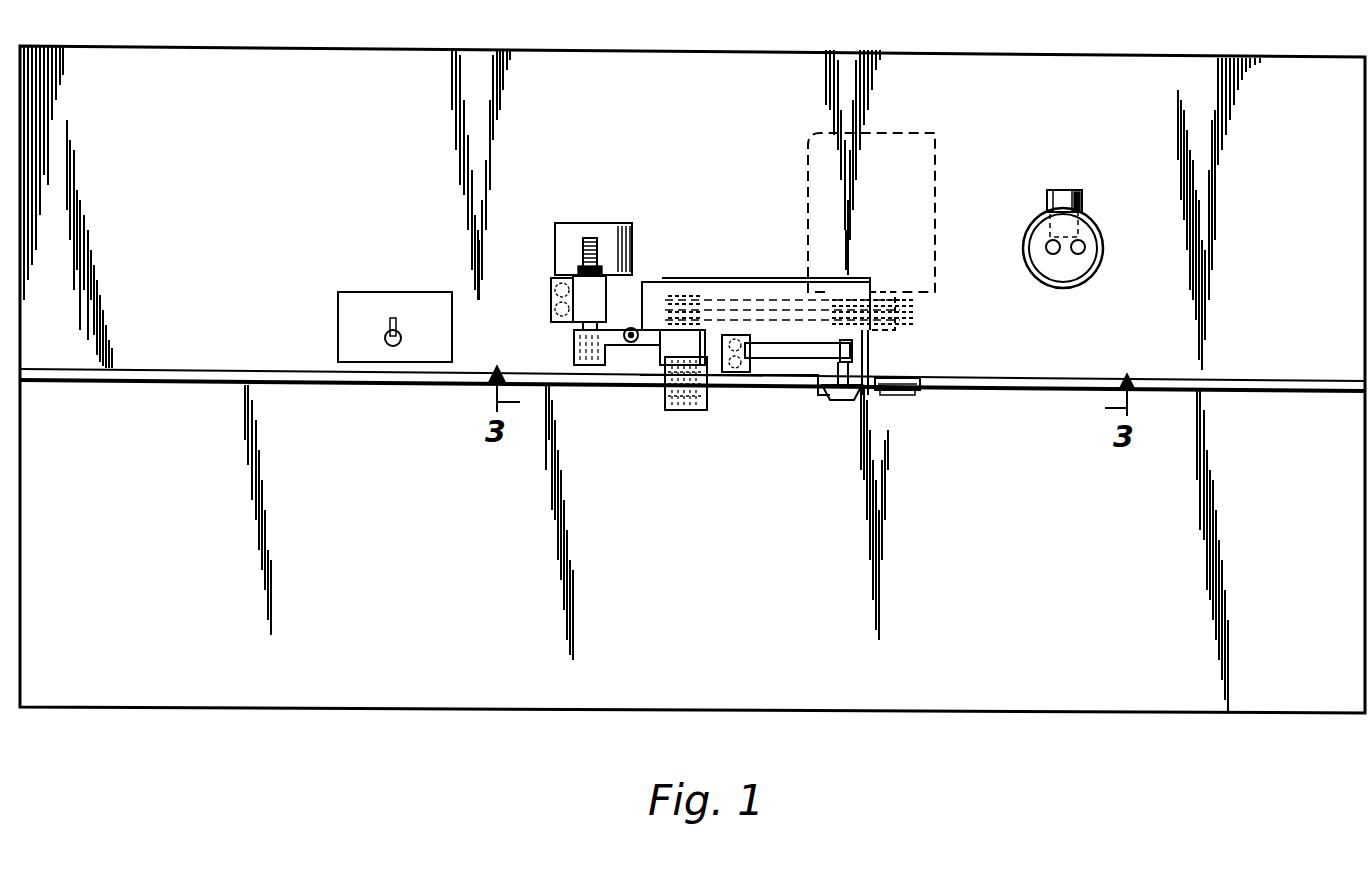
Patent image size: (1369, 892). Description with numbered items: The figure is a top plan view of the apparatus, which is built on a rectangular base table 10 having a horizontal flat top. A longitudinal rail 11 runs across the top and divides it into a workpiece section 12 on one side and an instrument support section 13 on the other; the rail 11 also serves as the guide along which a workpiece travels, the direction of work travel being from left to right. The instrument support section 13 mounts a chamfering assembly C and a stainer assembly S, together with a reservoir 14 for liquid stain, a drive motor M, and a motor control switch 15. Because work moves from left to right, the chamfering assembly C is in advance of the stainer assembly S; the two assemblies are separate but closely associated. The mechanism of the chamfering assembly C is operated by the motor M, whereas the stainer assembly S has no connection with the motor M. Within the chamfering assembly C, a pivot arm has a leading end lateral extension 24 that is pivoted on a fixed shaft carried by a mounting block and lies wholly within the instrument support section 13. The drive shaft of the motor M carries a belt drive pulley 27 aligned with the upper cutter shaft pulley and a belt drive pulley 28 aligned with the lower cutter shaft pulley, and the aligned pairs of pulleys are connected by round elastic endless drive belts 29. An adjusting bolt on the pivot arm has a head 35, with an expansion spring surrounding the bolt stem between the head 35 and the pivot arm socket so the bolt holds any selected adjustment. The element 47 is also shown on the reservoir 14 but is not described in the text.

The base table 10 is at (1160, 726).
The longitudinal rail 11 is at (1013, 392).
The workpiece section 12 is at (745, 600).
The instrument support section 13 is at (292, 158).
The reservoir 14 is at (1068, 268).
The motor control switch 15 is at (388, 320).
The lateral extension 24 is at (572, 353).
The belt drive pulley 27 is at (900, 297).
The belt drive pulley 28 is at (914, 336).
The drive belts 29 is at (758, 302).
The bolt head 35 is at (633, 343).
The connector 47 is at (1058, 198).
The chamfering assembly C is at (639, 240).
The drive motor M is at (925, 172).
The stainer assembly S is at (866, 370).